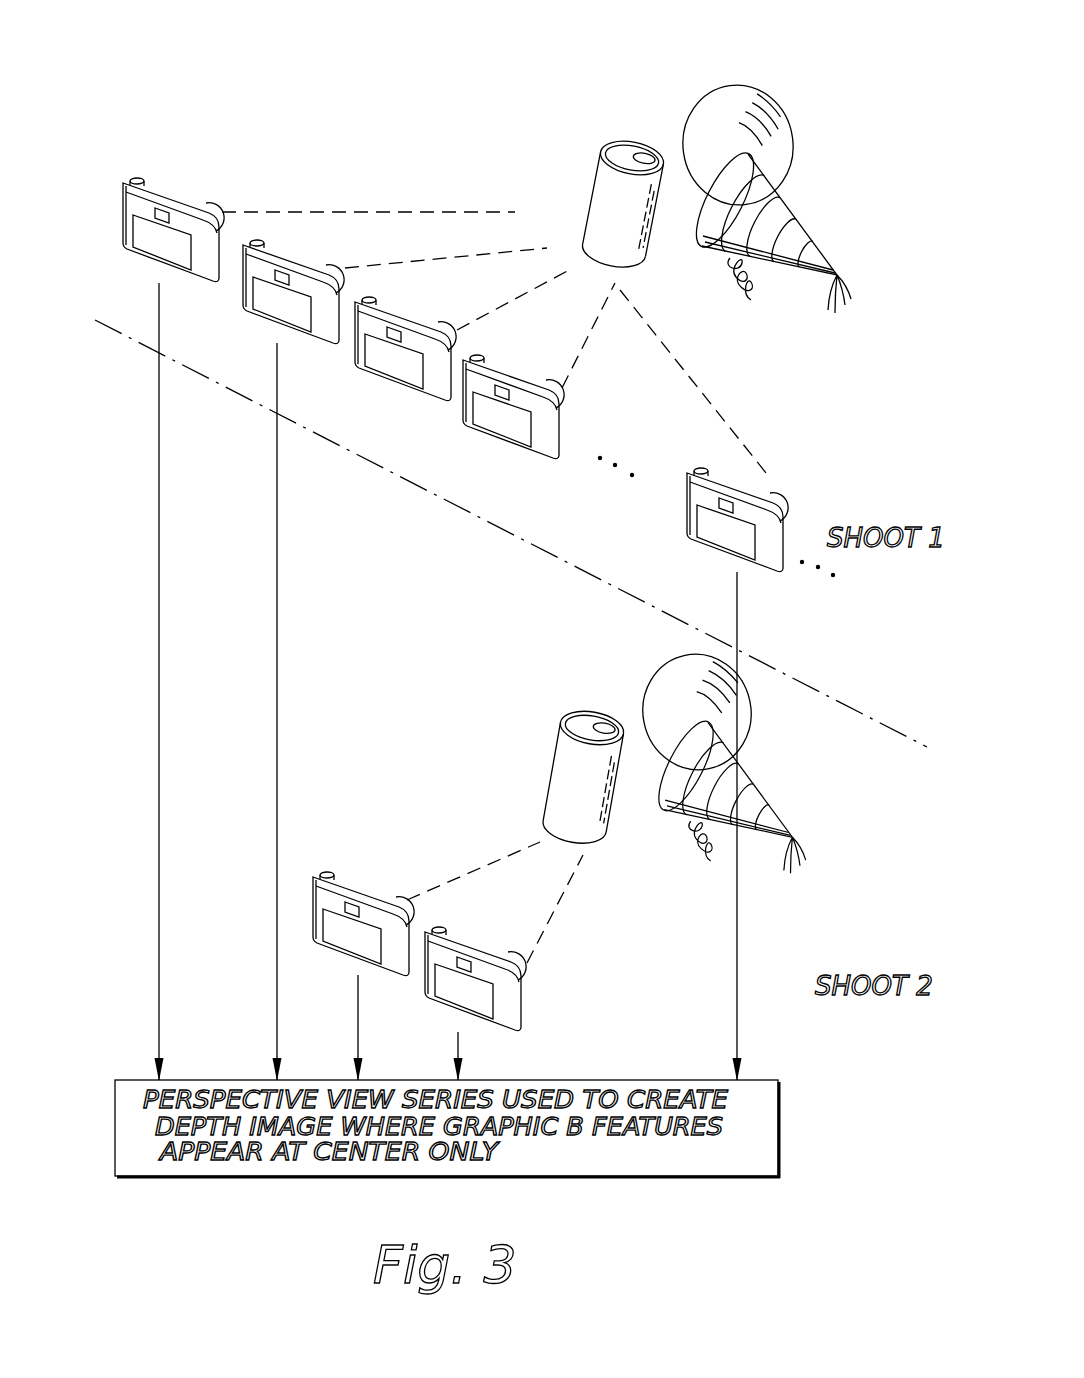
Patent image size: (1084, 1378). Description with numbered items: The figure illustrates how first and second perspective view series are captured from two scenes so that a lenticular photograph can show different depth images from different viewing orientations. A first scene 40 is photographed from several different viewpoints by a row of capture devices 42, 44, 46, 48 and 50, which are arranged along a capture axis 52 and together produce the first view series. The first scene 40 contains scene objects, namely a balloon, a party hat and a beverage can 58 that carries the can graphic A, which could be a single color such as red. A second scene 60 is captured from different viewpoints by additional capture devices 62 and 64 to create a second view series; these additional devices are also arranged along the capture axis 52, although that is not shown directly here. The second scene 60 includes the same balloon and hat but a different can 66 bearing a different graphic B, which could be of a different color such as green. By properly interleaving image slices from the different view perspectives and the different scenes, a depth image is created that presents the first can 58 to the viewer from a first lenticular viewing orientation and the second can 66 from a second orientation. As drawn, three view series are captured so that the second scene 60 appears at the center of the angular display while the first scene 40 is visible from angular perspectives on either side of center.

The first scene 40 is at (778, 174).
The capture device 42 is at (180, 201).
The capture device 44 is at (248, 310).
The capture device 46 is at (382, 377).
The capture device 48 is at (493, 430).
The capture device 50 is at (694, 533).
The capture axis 52 is at (849, 706).
The beverage can 58 is at (628, 146).
The second scene 60 is at (724, 771).
The additional capture device 62 is at (321, 940).
The additional capture device 64 is at (424, 987).
The different can 66 is at (554, 748).